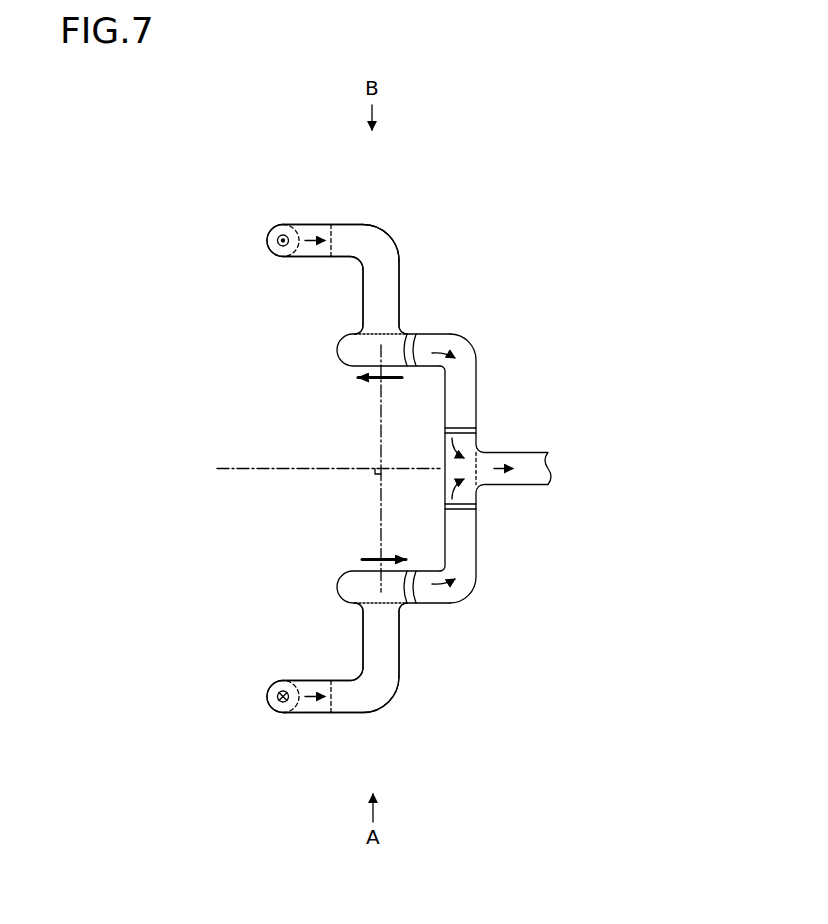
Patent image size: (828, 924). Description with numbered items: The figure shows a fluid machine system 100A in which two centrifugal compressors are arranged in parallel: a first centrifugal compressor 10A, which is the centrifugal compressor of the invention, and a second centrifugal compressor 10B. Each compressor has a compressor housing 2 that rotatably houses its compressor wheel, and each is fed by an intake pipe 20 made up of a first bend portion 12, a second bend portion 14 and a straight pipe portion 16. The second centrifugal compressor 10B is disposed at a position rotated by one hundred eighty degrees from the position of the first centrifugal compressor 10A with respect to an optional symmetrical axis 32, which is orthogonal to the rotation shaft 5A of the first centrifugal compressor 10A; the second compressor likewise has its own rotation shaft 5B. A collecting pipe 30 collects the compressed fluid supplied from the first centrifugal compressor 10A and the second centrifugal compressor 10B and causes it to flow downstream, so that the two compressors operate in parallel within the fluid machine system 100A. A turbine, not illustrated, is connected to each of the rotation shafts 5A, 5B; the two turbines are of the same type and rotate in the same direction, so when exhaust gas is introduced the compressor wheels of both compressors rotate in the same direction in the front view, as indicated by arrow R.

The fluid machine system 100A is at (210, 227).
The first centrifugal compressor 10A is at (283, 643).
The second centrifugal compressor 10B is at (282, 295).
The first bend portion 12 is at (310, 232).
The second bend portion 14 is at (373, 232).
The straight pipe portion 16 is at (395, 288).
The intake pipe 20 is at (418, 217).
The compressor housing 2 is at (345, 348).
The collecting pipe 30 is at (502, 530).
The symmetrical axis 32 is at (233, 468).
The rotation shaft of the first centrifugal compressor 5A is at (379, 534).
The rotation shaft of the second centrifugal compressor 5B is at (379, 405).
The arrow indicating rotation direction R is at (390, 384).